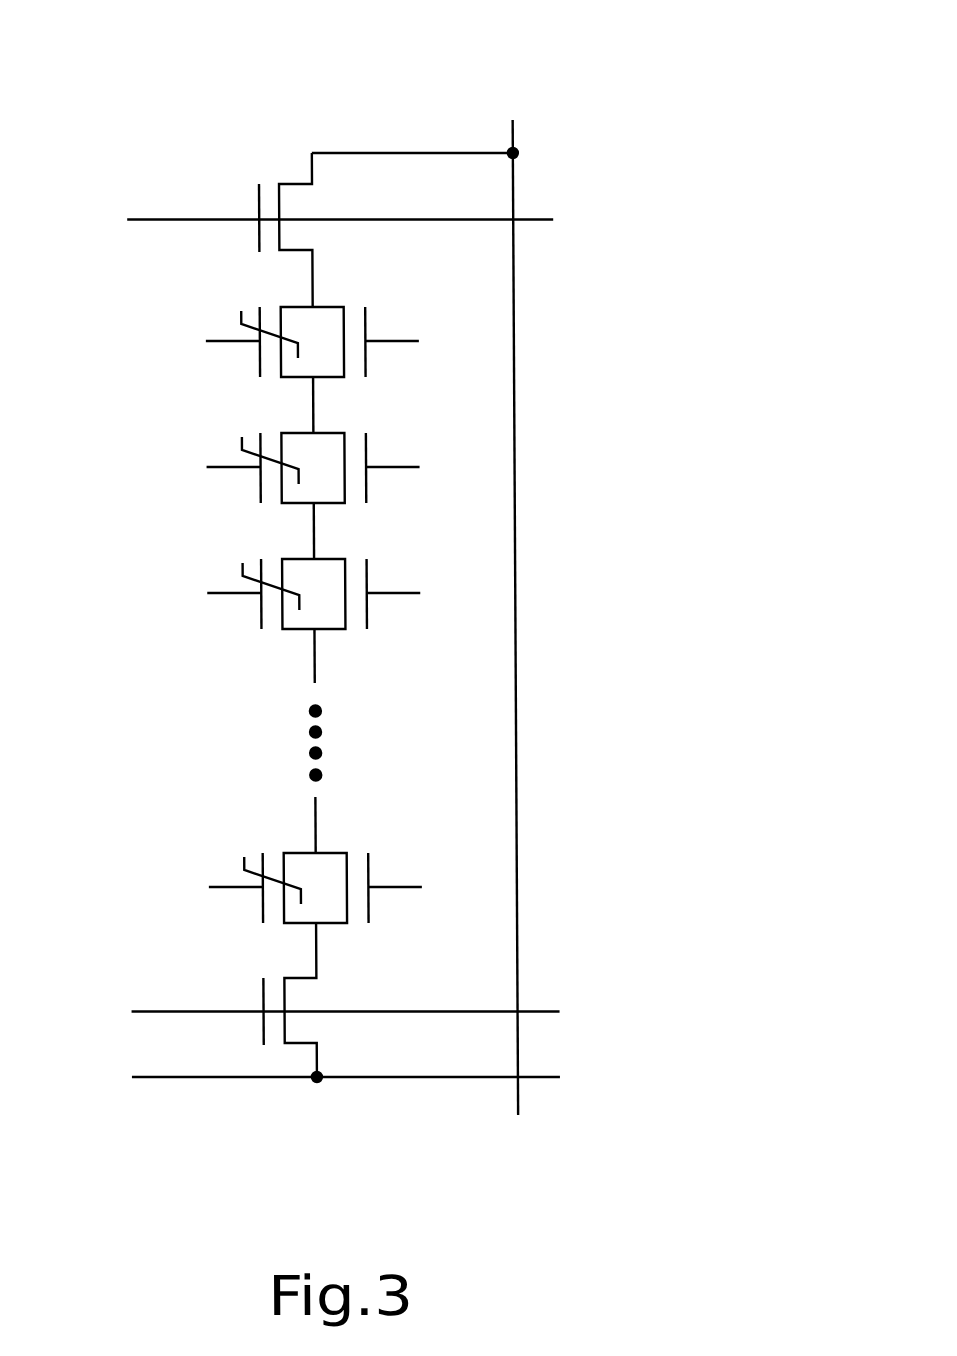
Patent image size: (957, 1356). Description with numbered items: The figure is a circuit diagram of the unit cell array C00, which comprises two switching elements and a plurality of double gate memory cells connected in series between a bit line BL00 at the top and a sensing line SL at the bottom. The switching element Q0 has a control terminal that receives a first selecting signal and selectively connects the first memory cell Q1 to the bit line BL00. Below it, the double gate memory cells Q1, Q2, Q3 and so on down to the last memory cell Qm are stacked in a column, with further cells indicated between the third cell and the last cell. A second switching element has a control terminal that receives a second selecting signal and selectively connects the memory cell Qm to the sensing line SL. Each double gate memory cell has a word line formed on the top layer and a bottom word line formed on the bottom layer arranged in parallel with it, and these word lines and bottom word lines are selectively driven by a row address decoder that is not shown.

The unit cell array C00 is at (318, 562).
The bit line BL00 is at (523, 602).
The sensing line SL is at (328, 1074).
The switching element Q0 is at (386, 230).
The double gate memory cell Q1 is at (303, 352).
The double gate memory cell Q2 is at (304, 479).
The double gate memory cell Q3 is at (304, 603).
The double gate memory cell Qm is at (306, 869).